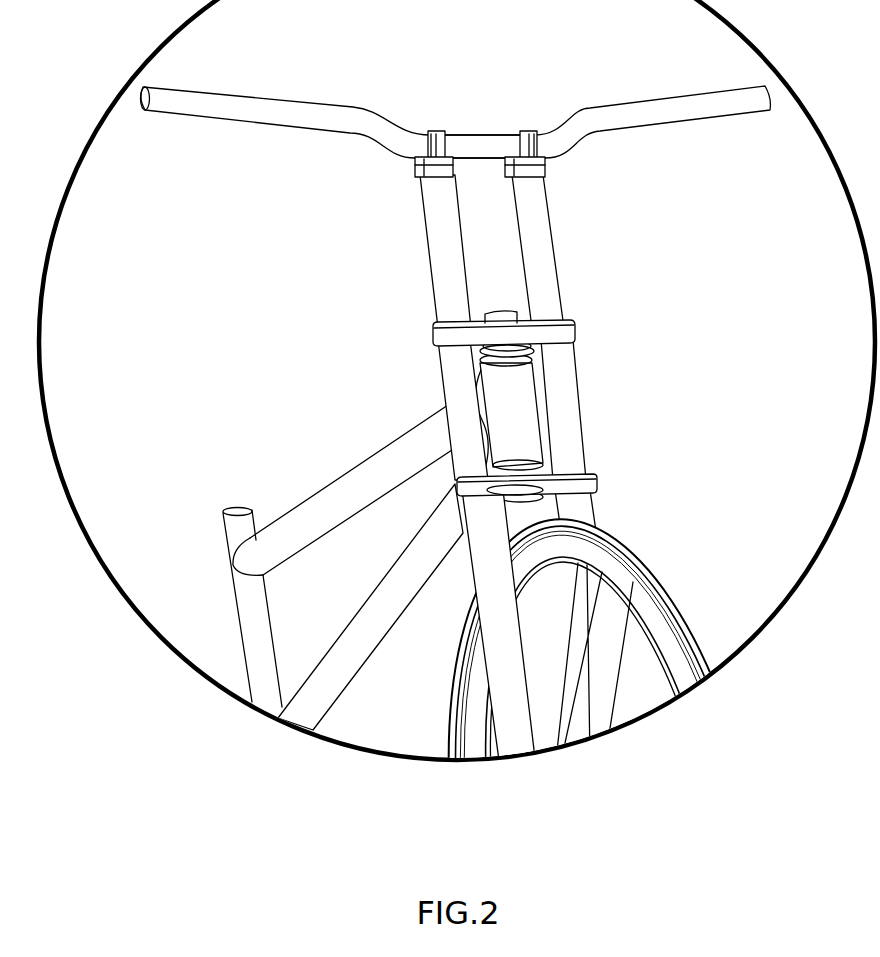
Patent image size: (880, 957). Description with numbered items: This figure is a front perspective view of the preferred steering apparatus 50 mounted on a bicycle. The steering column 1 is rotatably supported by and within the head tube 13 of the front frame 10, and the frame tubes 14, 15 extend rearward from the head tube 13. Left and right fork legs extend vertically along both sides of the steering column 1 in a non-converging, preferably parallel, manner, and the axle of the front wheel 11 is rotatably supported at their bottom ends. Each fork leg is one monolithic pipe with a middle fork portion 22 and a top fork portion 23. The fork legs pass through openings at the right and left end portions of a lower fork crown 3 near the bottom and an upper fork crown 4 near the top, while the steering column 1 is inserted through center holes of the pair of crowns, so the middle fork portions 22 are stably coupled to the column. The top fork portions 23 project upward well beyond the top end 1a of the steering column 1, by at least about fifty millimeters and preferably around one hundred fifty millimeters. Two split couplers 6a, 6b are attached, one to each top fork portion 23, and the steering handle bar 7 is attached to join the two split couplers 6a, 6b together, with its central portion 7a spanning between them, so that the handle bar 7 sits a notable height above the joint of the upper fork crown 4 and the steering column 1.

The apparatus 50 is at (161, 267).
The steering handle bar 7 is at (255, 115).
The handlebar center portion 7a is at (483, 140).
The split coupler 6a is at (415, 170).
The split coupler 6b is at (543, 166).
The top fork portion 23 is at (440, 258).
The top end of the steering column 1a is at (493, 311).
The upper fork crown 4 is at (570, 333).
The steering column 1 is at (540, 348).
The middle fork portion 22 is at (447, 375).
The lower fork crown 3 is at (595, 487).
The front wheel 11 is at (635, 542).
The front frame 10 is at (300, 367).
The head tube 13 is at (510, 410).
The top tube 14 is at (403, 448).
The down tube 15 is at (445, 528).